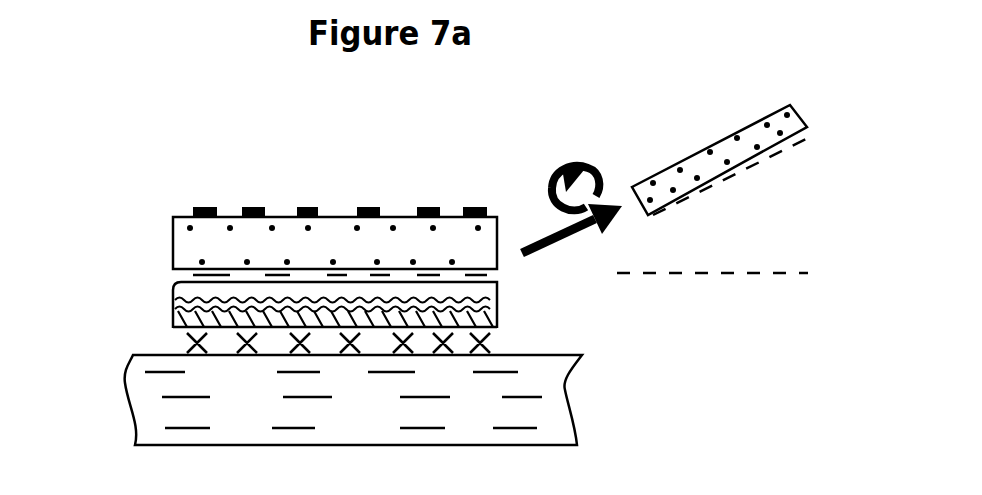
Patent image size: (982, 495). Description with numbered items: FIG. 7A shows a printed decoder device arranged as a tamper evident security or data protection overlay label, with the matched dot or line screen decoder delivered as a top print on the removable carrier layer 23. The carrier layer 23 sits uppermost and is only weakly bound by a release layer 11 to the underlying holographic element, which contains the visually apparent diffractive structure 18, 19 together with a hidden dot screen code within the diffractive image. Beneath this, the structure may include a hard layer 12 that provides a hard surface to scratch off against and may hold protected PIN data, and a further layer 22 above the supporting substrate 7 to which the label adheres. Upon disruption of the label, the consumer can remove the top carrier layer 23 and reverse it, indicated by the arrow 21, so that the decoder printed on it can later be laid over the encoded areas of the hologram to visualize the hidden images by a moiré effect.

The substrate 7 is at (545, 410).
The release layer 11 is at (193, 275).
The hard layer 12 is at (183, 331).
The diffractive structure 18 is at (198, 291).
The diffractive structure 19 is at (175, 308).
The carrier removal and reversal 21 is at (588, 146).
The interface layer 22 is at (497, 307).
The carrier layer 23 is at (203, 242).